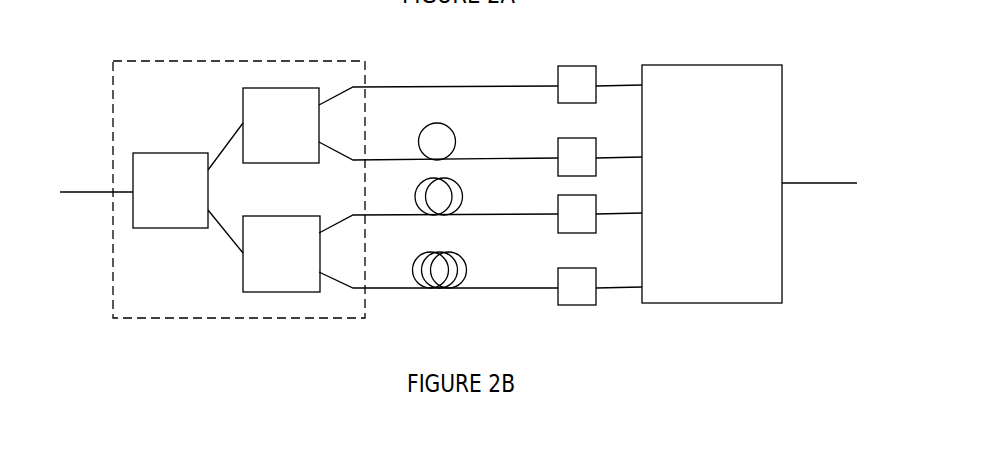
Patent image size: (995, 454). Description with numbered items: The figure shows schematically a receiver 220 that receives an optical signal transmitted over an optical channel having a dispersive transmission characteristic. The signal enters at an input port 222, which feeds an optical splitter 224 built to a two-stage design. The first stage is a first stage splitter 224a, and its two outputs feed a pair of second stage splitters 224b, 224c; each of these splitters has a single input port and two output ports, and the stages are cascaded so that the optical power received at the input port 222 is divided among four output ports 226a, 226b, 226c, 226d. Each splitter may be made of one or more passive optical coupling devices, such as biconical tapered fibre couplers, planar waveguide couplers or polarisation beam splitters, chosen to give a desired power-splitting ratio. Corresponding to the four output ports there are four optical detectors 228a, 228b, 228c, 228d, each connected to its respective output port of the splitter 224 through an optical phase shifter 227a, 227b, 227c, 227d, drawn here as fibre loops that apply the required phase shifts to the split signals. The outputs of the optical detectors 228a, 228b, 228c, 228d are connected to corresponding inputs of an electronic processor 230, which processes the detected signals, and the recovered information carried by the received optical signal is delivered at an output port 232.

The receiver 220 is at (820, 54).
The input port 222 is at (89, 192).
The optical splitter 224 is at (185, 318).
The first stage splitter 224a is at (182, 213).
The second stage splitter 224b is at (294, 150).
The second stage splitter 224c is at (294, 281).
The output port 226a is at (352, 88).
The output port 226b is at (340, 159).
The output port 226c is at (340, 225).
The output port 226d is at (355, 288).
The optical phase shifter 227a is at (442, 86).
The optical phase shifter 227b is at (440, 123).
The optical phase shifter 227c is at (460, 182).
The optical phase shifter 227d is at (458, 251).
The optical detector 228a is at (577, 66).
The optical detector 228b is at (570, 140).
The optical detector 228c is at (572, 233).
The optical detector 228d is at (587, 305).
The electronic processor 230 is at (782, 290).
The output port 232 is at (797, 183).